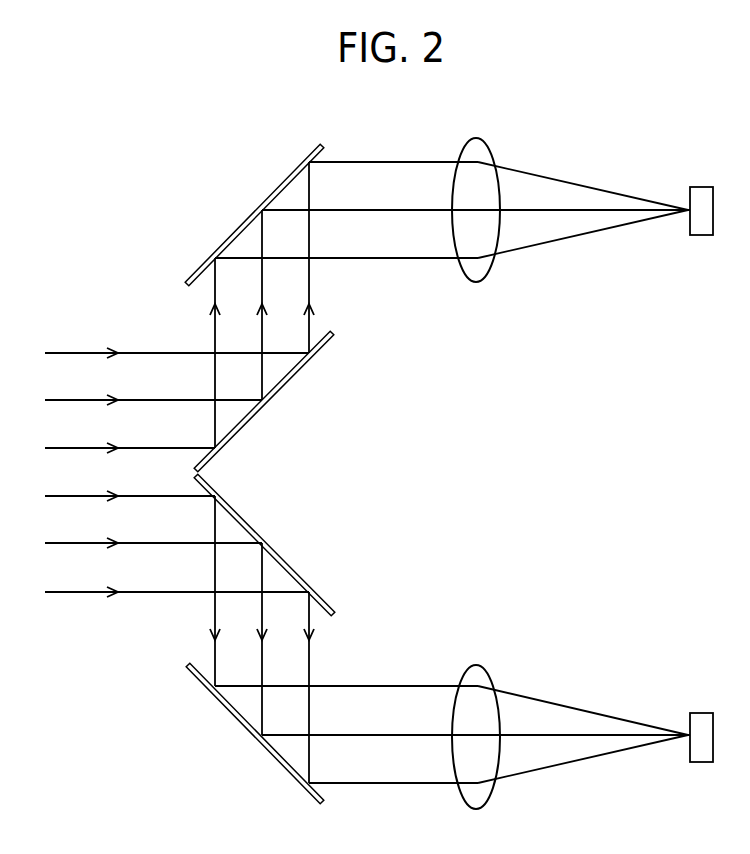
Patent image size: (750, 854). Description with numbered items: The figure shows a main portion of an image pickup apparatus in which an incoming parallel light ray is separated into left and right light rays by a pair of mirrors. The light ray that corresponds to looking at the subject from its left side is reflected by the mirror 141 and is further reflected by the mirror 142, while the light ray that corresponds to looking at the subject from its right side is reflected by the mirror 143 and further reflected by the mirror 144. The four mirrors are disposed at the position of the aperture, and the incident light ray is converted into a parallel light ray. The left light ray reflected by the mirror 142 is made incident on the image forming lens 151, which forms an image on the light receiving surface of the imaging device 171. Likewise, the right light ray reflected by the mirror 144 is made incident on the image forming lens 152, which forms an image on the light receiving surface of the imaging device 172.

The mirror 141 is at (248, 427).
The mirror 142 is at (272, 192).
The mirror 143 is at (313, 558).
The mirror 144 is at (273, 757).
The image forming lens 151 is at (477, 140).
The image forming lens 152 is at (477, 665).
The imaging device 171 is at (702, 187).
The imaging device 172 is at (702, 713).